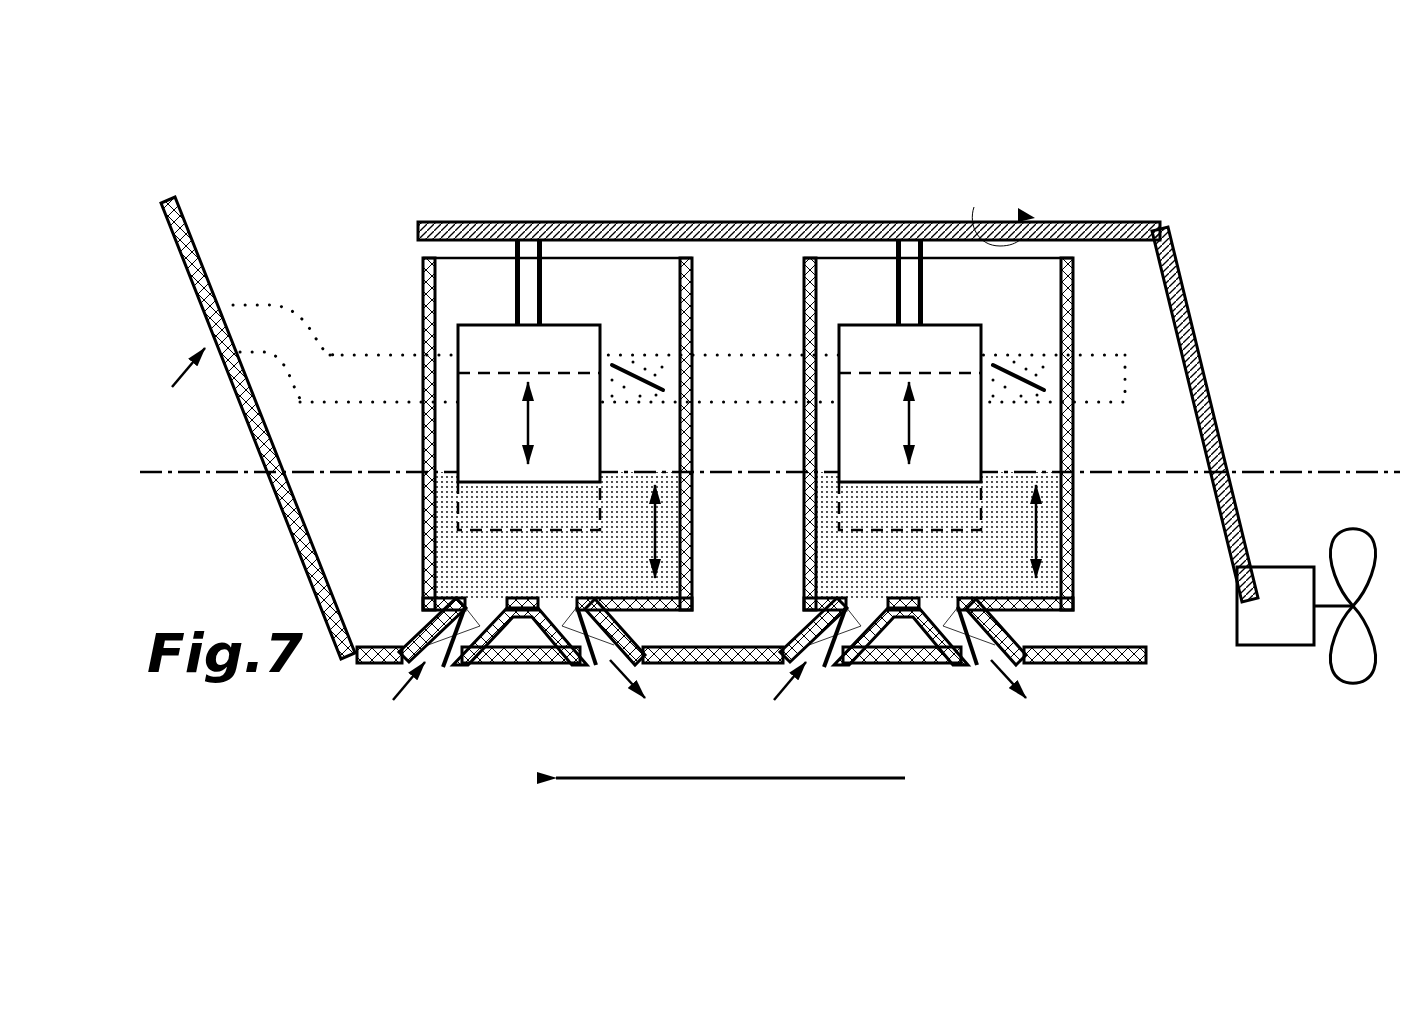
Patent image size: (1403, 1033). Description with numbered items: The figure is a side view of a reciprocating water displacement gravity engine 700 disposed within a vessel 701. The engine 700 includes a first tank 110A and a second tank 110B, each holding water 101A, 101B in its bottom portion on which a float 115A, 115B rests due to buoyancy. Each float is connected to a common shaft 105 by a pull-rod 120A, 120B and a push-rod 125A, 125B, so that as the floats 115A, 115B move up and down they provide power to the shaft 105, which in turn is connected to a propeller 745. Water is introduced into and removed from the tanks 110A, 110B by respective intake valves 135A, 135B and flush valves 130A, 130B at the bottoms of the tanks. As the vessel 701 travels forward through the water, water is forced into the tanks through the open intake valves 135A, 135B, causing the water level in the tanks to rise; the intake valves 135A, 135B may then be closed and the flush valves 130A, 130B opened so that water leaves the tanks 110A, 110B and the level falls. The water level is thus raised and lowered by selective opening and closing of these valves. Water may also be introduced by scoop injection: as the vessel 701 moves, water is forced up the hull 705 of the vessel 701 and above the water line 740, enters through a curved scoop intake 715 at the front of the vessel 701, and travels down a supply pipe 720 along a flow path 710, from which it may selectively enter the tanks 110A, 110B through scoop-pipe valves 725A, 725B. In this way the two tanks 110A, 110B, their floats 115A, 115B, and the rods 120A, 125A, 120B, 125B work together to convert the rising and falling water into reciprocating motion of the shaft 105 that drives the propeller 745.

The reciprocating water displacement gravity engine 700 is at (1198, 186).
The vessel 701 is at (345, 205).
The hull 705 is at (186, 216).
The shaft 105 is at (597, 222).
The feedstock flow path 710 is at (300, 294).
The curved scoop intake 715 is at (306, 322).
The supply pipe 720 is at (797, 402).
The pull-rod 120A is at (513, 282).
The push-rod 125A is at (546, 280).
The float 115A is at (458, 362).
The scoop-pipe valve 725A is at (642, 392).
The first tank 110A is at (423, 450).
The water 101A is at (423, 567).
The intake valve 135A is at (447, 660).
The flush valve 130A is at (603, 662).
The pull-rod 120B is at (894, 283).
The push-rod 125B is at (927, 280).
The float 115B is at (840, 362).
The scoop-pipe valve 725B is at (1022, 392).
The second tank 110B is at (805, 520).
The water 101B is at (806, 567).
The intake valve 135B is at (828, 660).
The flush valve 130B is at (984, 662).
The water line 740 is at (1265, 472).
The propeller 745 is at (1243, 645).